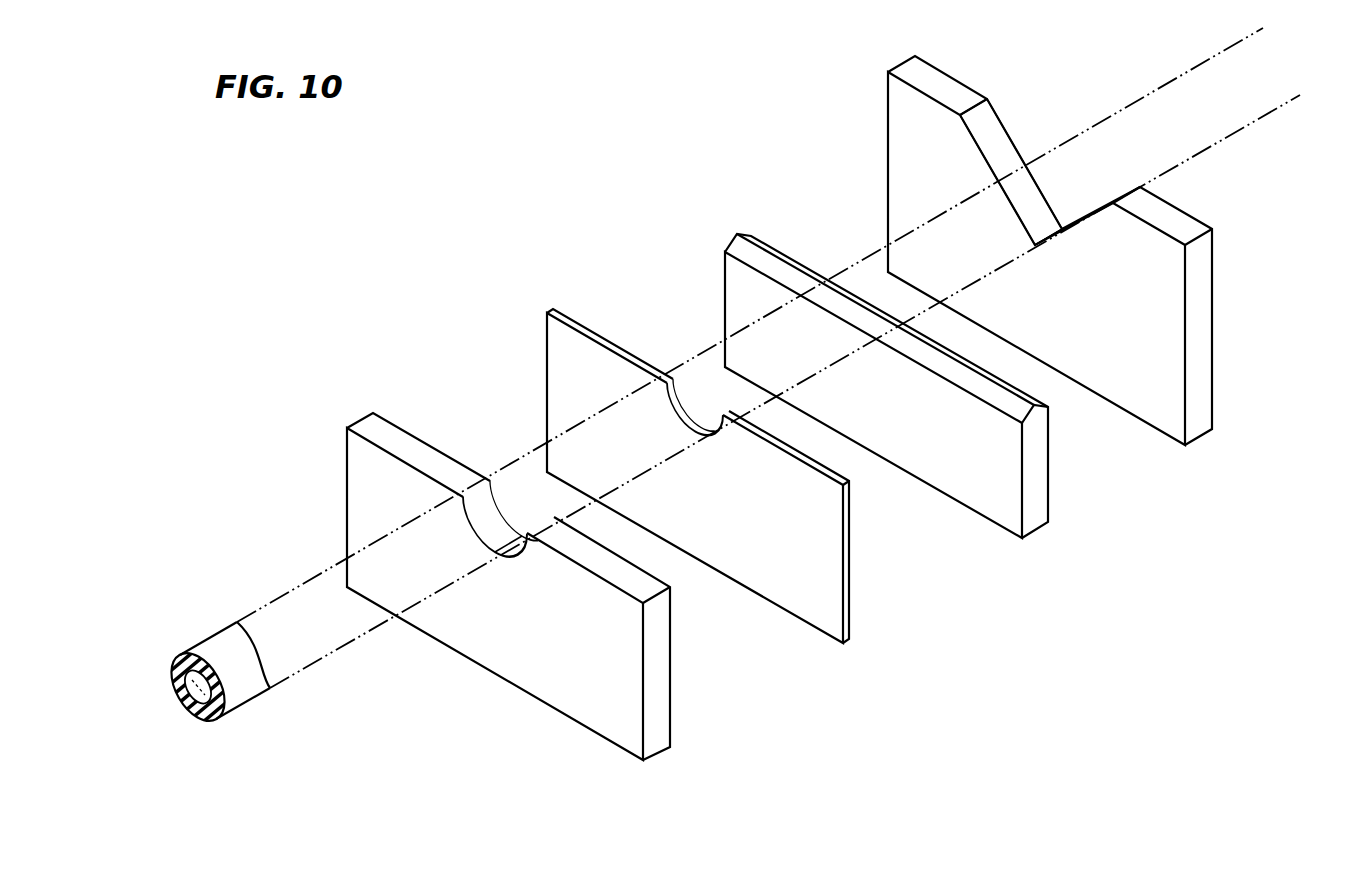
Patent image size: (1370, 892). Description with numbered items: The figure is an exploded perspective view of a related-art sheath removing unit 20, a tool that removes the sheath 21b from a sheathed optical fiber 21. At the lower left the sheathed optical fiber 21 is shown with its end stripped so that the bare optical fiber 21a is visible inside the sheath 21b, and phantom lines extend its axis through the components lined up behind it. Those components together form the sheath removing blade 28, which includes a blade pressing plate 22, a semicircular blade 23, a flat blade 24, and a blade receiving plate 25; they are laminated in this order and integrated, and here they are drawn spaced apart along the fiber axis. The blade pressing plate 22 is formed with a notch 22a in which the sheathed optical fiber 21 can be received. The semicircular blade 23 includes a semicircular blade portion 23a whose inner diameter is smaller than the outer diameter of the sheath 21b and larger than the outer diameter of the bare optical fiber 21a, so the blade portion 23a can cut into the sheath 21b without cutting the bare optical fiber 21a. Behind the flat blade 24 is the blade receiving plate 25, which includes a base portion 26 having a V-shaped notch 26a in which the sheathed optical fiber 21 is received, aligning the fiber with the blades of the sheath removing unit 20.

The sheath removing unit 20 is at (1033, 88).
The sheathed optical fiber 21 is at (210, 632).
The bare optical fiber 21a is at (198, 698).
The sheath 21b is at (243, 700).
The blade pressing plate 22 is at (668, 700).
The notch 22a is at (492, 507).
The semicircular blade 23 is at (850, 597).
The semicircular blade portion 23a is at (678, 398).
The flat blade 24 is at (1040, 493).
The blade receiving plate 25 is at (1200, 360).
The base portion 26 is at (1215, 292).
The V-shaped notch 26a is at (1030, 191).
The sheath removing blade 28 is at (481, 293).